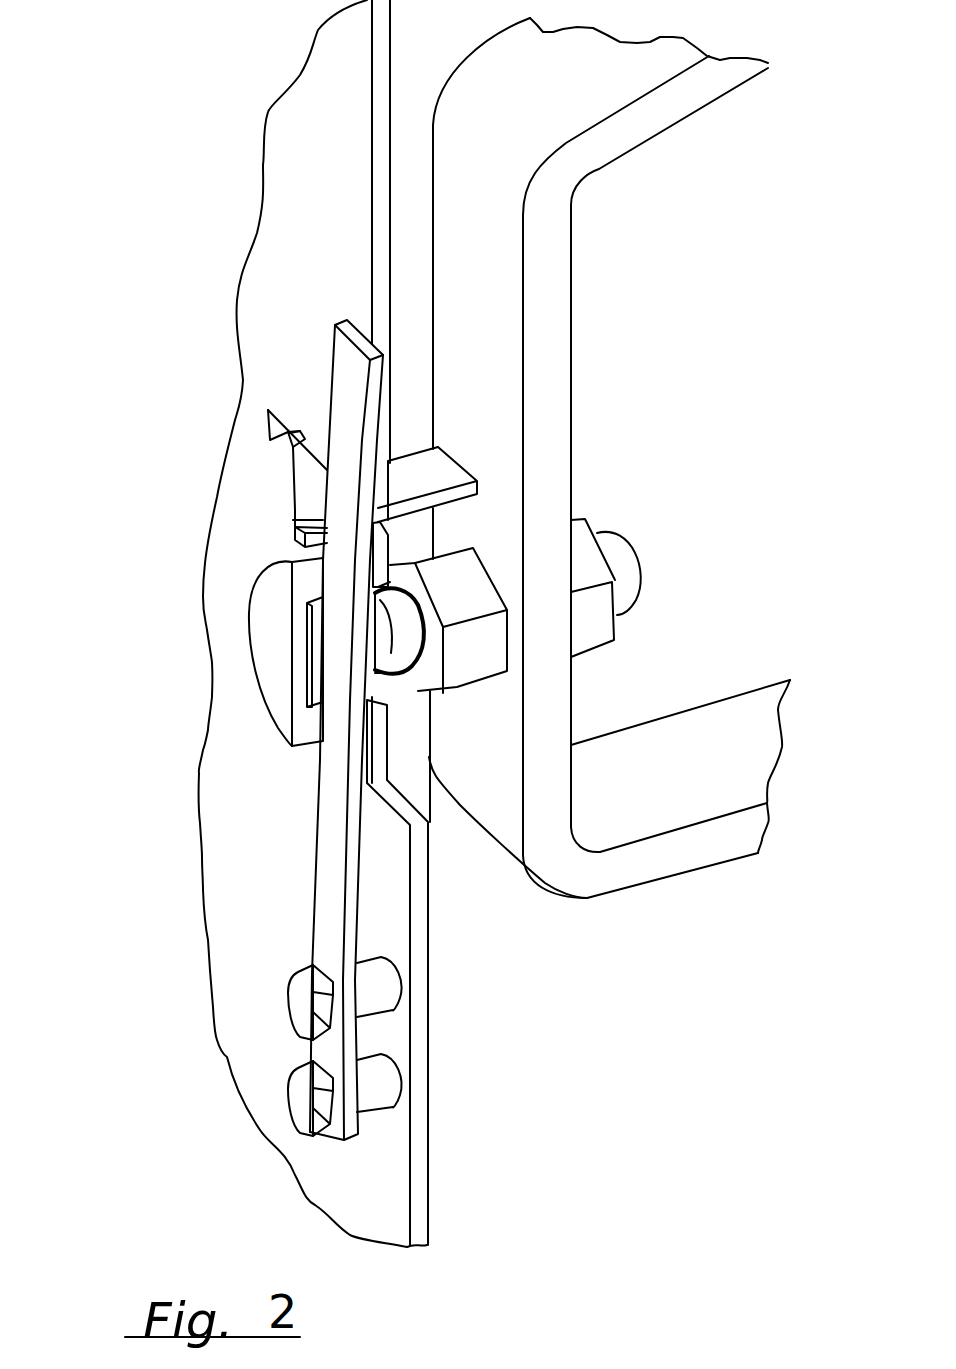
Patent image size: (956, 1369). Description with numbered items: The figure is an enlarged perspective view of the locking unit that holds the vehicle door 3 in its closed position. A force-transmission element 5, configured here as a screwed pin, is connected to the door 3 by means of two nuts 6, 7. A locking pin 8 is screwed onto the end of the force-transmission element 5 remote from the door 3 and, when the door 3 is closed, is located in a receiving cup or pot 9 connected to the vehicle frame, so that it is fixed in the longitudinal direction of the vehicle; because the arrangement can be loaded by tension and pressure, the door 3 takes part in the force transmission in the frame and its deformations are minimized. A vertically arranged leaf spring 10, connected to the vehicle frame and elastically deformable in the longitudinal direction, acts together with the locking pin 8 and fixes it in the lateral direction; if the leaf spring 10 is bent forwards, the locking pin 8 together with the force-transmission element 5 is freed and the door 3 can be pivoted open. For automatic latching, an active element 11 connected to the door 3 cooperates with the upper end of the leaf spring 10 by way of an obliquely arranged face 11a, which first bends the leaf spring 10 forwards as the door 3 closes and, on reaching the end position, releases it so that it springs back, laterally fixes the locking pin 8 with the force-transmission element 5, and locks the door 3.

The door 3 is at (660, 107).
The force-transmission element 5 is at (613, 552).
The nut 6 is at (478, 660).
The nut 7 is at (593, 625).
The locking pin 8 is at (377, 667).
The receiving cup or pot 9 is at (273, 655).
The leaf spring 10 is at (328, 769).
The active element 11 is at (317, 482).
The obliquely arranged face 11a is at (293, 507).